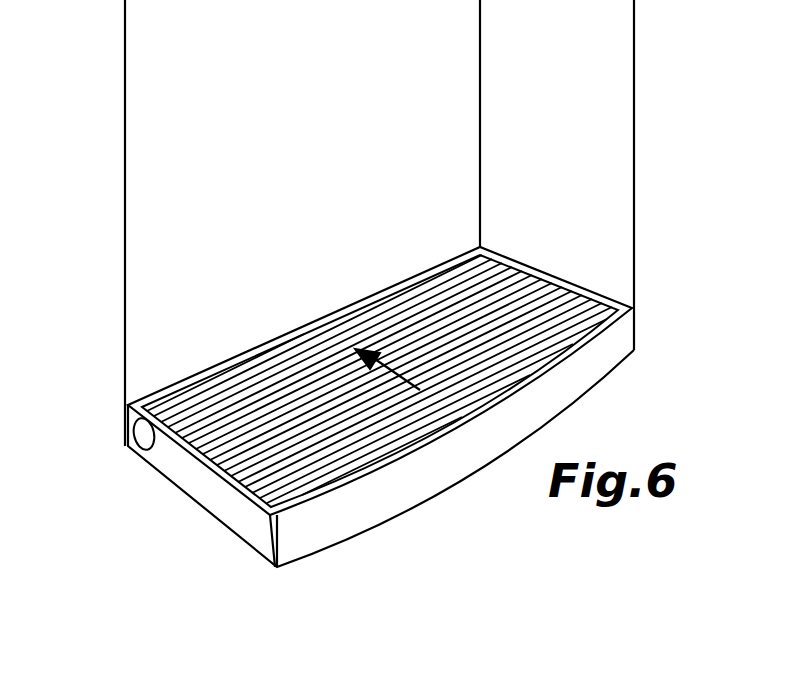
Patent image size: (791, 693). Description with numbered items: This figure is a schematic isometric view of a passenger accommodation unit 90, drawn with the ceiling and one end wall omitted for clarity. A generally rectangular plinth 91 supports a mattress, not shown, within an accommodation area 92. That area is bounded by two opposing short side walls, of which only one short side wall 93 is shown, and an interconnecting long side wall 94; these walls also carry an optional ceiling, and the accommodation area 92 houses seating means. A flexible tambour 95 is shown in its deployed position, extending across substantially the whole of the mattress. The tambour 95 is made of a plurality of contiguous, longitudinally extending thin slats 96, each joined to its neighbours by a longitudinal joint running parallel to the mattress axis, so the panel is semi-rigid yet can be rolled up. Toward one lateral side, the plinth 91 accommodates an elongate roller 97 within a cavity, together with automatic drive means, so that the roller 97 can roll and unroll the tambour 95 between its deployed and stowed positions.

The passenger accommodation unit 90 is at (411, 223).
The plinth 91 is at (329, 411).
The accommodation area 92 is at (350, 107).
The short side wall 93 is at (585, 40).
The long side wall 94 is at (198, 185).
The tambour 95 is at (380, 367).
The slats 96 is at (418, 318).
The roller 97 is at (133, 433).